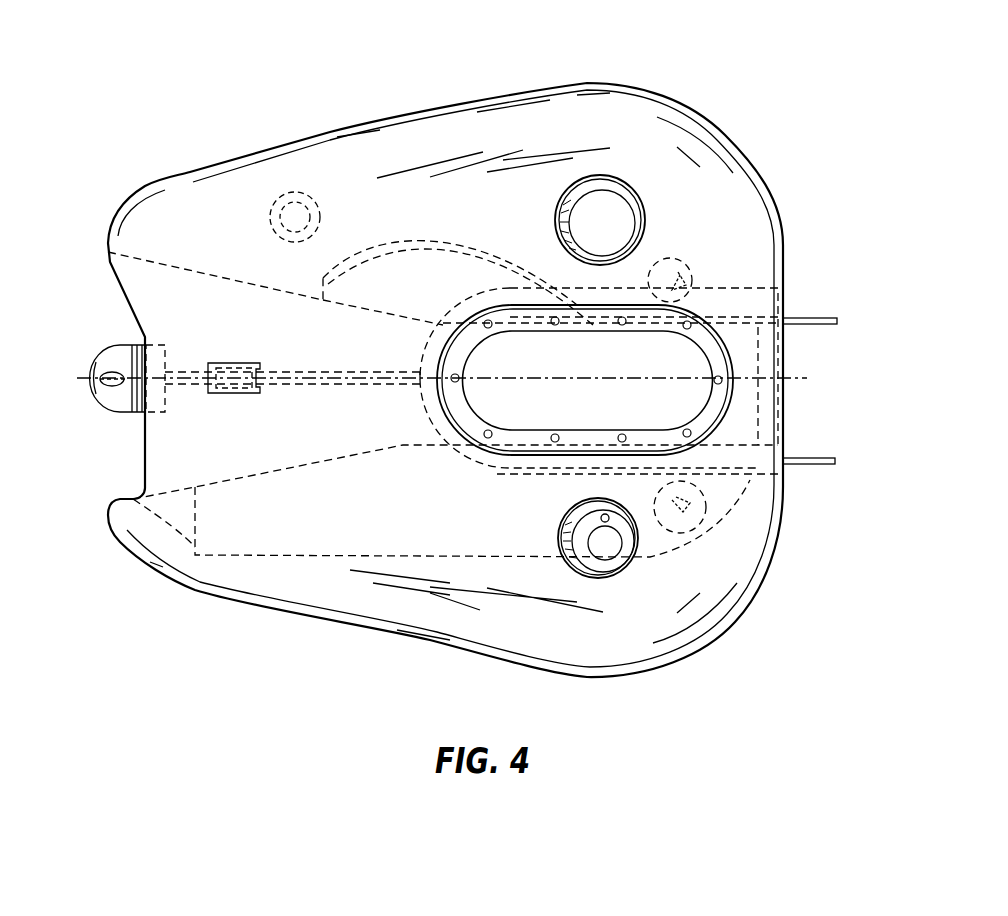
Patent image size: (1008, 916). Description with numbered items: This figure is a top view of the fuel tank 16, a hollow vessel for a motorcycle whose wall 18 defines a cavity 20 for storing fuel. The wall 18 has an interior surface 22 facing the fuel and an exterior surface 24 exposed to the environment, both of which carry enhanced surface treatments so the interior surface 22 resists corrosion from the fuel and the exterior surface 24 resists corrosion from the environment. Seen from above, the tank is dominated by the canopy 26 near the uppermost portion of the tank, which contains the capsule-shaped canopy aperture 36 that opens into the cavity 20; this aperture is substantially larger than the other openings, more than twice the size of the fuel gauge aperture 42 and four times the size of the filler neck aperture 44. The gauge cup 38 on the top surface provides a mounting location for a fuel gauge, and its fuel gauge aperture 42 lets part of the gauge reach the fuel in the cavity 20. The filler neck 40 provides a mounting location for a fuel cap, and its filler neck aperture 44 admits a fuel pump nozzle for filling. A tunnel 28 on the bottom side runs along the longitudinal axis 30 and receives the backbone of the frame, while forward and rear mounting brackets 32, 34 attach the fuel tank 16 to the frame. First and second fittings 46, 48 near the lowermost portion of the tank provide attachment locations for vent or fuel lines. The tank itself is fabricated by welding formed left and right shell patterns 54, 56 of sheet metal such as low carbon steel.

The fuel tank 16 is at (808, 128).
The wall 18 is at (747, 188).
The cavity 20 is at (610, 205).
The interior surface 22 is at (665, 369).
The exterior surface 24 is at (423, 221).
The canopy 26 is at (740, 357).
The tunnel 28 is at (143, 472).
The longitudinal axis 30 is at (807, 378).
The forward mounting bracket 32 is at (810, 320).
The rear mounting bracket 34 is at (110, 360).
The canopy aperture 36 is at (525, 333).
The gauge cup 38 is at (647, 228).
The filler neck 40 is at (617, 575).
The fuel gauge aperture 42 is at (570, 223).
The filler neck aperture 44 is at (607, 545).
The first fitting 46 is at (690, 265).
The second fitting 48 is at (707, 533).
The left shell pattern 54 is at (610, 115).
The right shell pattern 56 is at (315, 597).